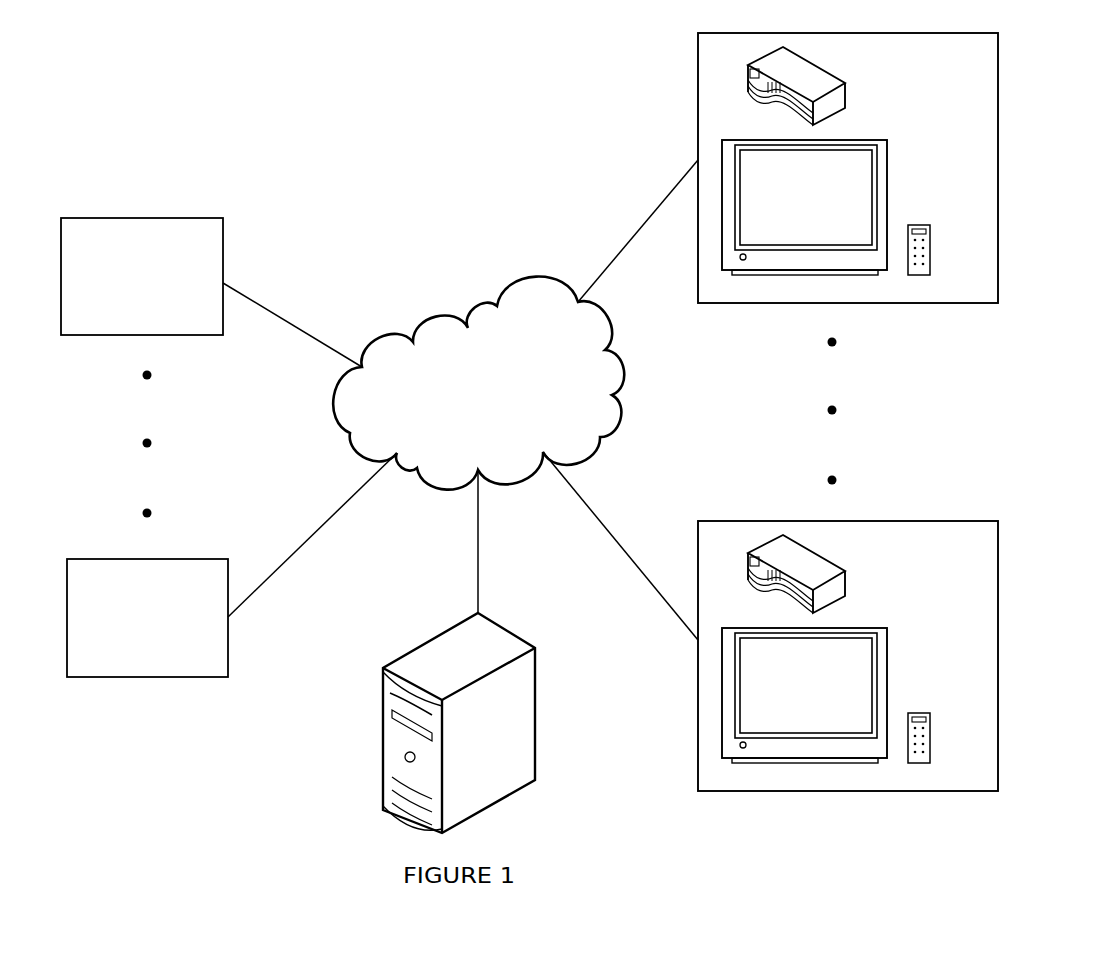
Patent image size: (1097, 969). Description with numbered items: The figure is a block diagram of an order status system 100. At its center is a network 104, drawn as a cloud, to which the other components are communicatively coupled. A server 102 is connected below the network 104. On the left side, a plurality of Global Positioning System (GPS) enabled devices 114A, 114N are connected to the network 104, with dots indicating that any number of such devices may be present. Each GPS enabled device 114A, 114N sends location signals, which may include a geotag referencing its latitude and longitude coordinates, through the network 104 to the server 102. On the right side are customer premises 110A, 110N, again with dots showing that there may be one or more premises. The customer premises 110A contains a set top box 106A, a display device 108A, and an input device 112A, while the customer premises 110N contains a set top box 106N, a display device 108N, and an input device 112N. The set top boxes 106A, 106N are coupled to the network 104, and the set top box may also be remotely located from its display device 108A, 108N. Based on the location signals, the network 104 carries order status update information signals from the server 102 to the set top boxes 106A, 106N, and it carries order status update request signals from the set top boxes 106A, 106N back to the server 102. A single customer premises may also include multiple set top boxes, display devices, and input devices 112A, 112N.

The order status system 100 is at (450, 53).
The server 102 is at (505, 625).
The network 104 is at (495, 405).
The set top box 106A is at (847, 92).
The set top box 106N is at (821, 574).
The display device 108A is at (888, 183).
The display device 108N is at (832, 695).
The customer premises 110A is at (998, 68).
The customer premises 110N is at (875, 654).
The input device 112A is at (933, 250).
The input device 112N is at (949, 731).
The Global Positioning System (GPS) enabled device 114A is at (223, 240).
The Global Positioning System (GPS) enabled device 114N is at (228, 583).